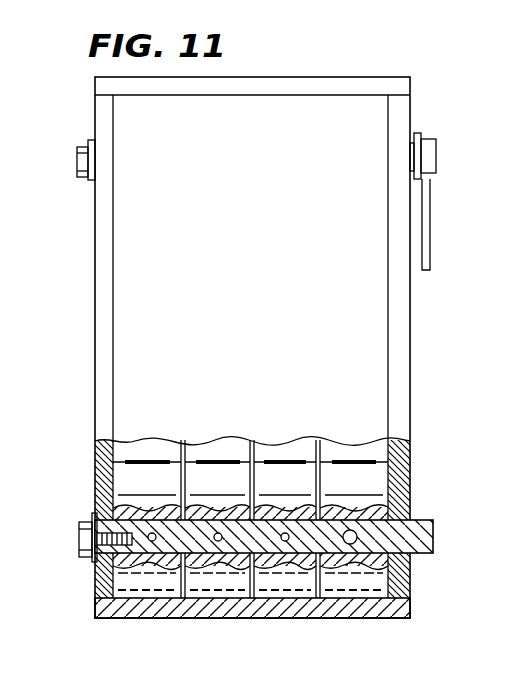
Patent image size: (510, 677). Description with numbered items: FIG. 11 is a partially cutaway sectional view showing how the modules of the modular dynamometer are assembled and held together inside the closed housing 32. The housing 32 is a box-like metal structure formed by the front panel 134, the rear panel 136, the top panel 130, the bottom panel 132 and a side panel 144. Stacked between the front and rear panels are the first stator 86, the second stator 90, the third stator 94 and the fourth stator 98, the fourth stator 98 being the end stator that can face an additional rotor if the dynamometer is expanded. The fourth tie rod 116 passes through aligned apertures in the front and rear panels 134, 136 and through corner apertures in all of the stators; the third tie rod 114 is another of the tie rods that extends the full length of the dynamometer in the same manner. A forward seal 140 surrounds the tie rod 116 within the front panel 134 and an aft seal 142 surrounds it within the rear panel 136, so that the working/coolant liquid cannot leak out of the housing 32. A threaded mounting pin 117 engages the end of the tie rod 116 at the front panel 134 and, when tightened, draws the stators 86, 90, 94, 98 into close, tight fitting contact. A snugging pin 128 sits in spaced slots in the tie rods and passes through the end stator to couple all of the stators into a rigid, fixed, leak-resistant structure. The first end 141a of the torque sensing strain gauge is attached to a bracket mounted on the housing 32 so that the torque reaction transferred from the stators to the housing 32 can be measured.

The closed housing 32 is at (86, 241).
The top panel 130 is at (292, 59).
The side panel 144 is at (353, 312).
The front panel 134 is at (94, 341).
The rear panel 136 is at (411, 383).
The aft seal 142 is at (397, 519).
The first stator 86 is at (149, 479).
The second stator 90 is at (219, 479).
The third stator 94 is at (285, 479).
The fourth stator 98 is at (353, 479).
The fourth tie rod 116 is at (437, 537).
The snugging pin 128 is at (348, 548).
The bottom panel 132 is at (98, 606).
The threaded mounting pin 117 is at (77, 158).
The forward seal 140 is at (104, 566).
The third tie rod 114 is at (437, 150).
The first end of the torque sensing strain gauge 141a is at (432, 245).